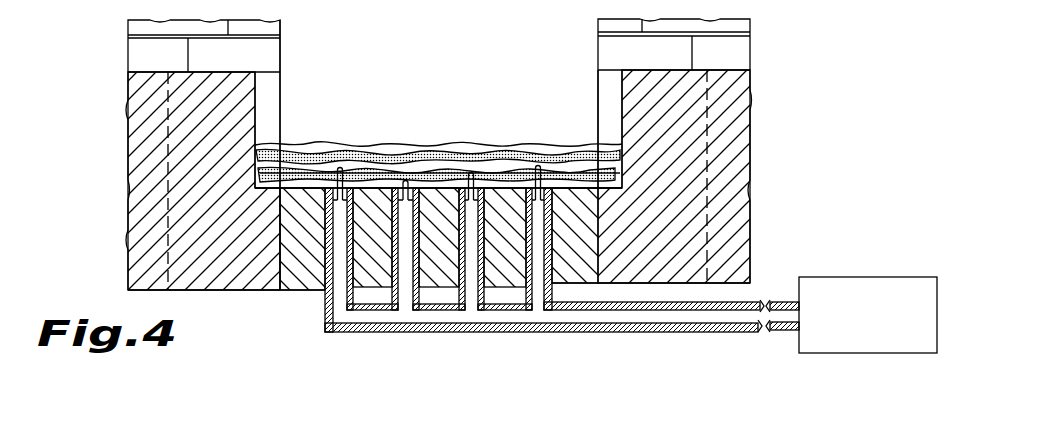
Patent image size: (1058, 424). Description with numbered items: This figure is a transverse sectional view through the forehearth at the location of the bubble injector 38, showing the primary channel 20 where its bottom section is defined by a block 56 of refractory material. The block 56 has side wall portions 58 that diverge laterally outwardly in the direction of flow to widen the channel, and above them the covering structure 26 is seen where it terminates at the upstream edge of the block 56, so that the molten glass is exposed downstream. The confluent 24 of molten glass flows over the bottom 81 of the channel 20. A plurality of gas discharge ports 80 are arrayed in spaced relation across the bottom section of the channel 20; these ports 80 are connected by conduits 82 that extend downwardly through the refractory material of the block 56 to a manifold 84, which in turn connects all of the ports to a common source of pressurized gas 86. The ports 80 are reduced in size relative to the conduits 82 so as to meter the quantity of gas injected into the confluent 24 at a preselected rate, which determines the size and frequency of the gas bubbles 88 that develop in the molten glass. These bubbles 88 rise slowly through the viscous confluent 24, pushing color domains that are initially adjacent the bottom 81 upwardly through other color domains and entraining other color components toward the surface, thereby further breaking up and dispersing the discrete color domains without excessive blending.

The primary channel 20 is at (598, 97).
The confluent 24 is at (547, 143).
The covering structure 26 is at (262, 50).
The bubble injector 38 is at (517, 235).
The block 56 is at (738, 153).
The side wall portions 58 is at (262, 106).
The gas discharge ports 80 is at (391, 150).
The bottom 81 is at (290, 186).
The conduits 82 is at (397, 258).
The manifold 84 is at (396, 332).
The source of pressurized gas 86 is at (885, 277).
The gas bubbles 88 is at (350, 145).